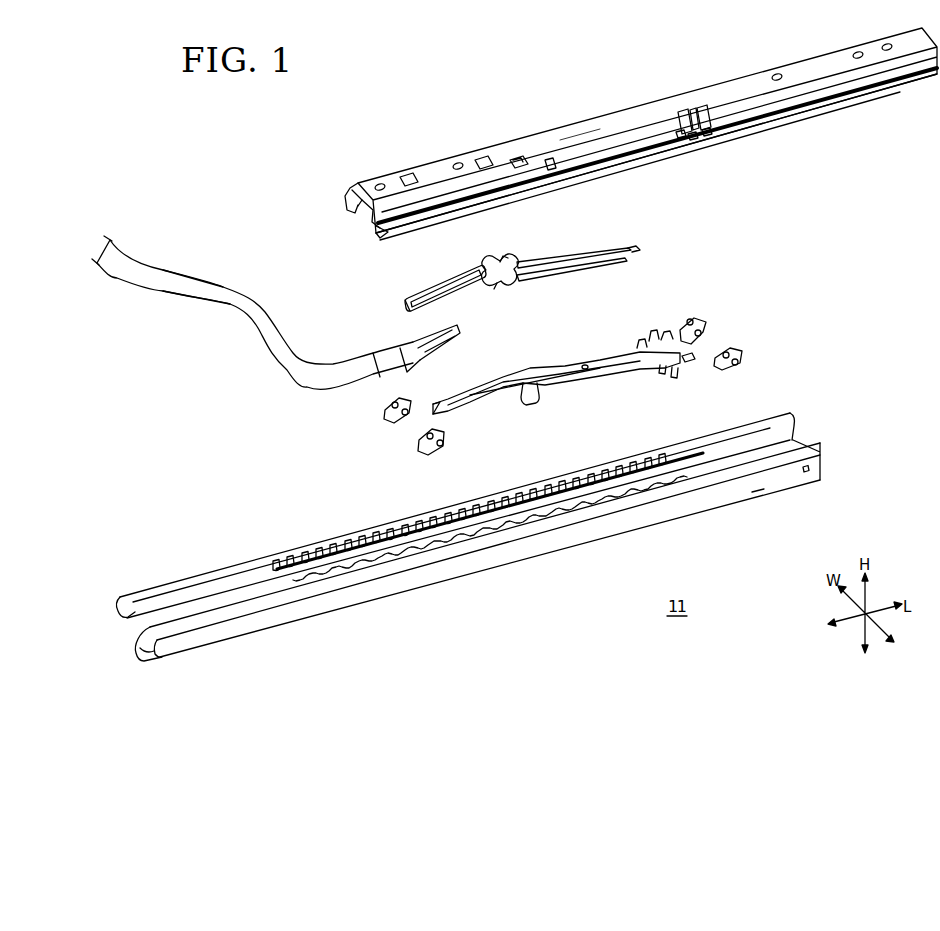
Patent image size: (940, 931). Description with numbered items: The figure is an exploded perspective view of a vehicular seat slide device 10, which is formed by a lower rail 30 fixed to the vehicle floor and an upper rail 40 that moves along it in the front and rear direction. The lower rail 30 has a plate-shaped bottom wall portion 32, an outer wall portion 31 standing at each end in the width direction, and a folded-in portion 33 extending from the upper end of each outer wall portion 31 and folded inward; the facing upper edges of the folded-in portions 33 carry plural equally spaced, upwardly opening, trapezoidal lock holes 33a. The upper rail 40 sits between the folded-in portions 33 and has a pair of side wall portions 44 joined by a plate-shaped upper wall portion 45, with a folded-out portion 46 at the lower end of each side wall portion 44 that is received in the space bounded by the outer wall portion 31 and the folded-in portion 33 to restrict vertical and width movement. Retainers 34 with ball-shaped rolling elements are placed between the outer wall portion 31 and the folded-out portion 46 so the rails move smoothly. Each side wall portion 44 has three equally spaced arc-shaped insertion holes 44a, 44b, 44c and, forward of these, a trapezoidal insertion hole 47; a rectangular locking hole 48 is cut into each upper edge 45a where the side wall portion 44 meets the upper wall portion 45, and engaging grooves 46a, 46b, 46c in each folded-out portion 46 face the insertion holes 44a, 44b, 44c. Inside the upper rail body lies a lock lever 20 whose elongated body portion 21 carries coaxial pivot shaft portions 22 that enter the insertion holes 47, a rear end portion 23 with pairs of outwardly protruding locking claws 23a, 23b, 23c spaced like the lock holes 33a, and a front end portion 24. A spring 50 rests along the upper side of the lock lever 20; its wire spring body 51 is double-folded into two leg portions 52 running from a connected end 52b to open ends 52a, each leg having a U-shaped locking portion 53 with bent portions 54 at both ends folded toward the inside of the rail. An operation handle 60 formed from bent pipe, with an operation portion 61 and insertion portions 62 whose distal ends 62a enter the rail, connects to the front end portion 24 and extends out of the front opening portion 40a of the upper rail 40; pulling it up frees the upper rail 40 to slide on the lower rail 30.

The vehicular seat slide device 10 is at (258, 168).
The lock lever 20 is at (610, 350).
The body portion 21 is at (568, 385).
The pivot shaft portions 22 is at (532, 400).
The rear end portion 23 is at (703, 335).
The locking claw 23a is at (640, 335).
The locking claw 23b is at (653, 330).
The locking claw 23c is at (668, 335).
The front end portion 24 is at (440, 402).
The lower rail 30 is at (451, 546).
The outer wall portion 31 is at (120, 600).
The bottom wall portion 32 is at (135, 645).
The folded-in portion 33 is at (409, 538).
The lock holes 33a is at (482, 538).
The retainer 34 is at (707, 313).
The upper rail 40 is at (797, 63).
The front opening portion 40a is at (351, 208).
The side wall portion 44 is at (368, 213).
The insertion hole 44a is at (683, 108).
The insertion hole 44b is at (693, 105).
The insertion hole 44c is at (708, 105).
The upper wall portion 45 is at (368, 188).
The upper edge 45a is at (583, 137).
The folded-out portion 46 is at (345, 196).
The engaging groove 46a is at (685, 138).
The engaging groove 46b is at (697, 140).
The engaging groove 46c is at (708, 133).
The insertion hole 47 is at (577, 178).
The locking hole 48 is at (518, 153).
The spring 50 is at (517, 276).
The spring body 51 is at (450, 274).
The leg portion 52 is at (605, 251).
The open end 52a is at (637, 251).
The connected end 52b is at (425, 290).
The locking portion 53 is at (487, 259).
The bent portion 54 is at (530, 252).
The operation handle 60 is at (293, 312).
The operation portion 61 is at (190, 282).
The insertion portion 62 is at (402, 343).
The distal end 62a is at (457, 342).